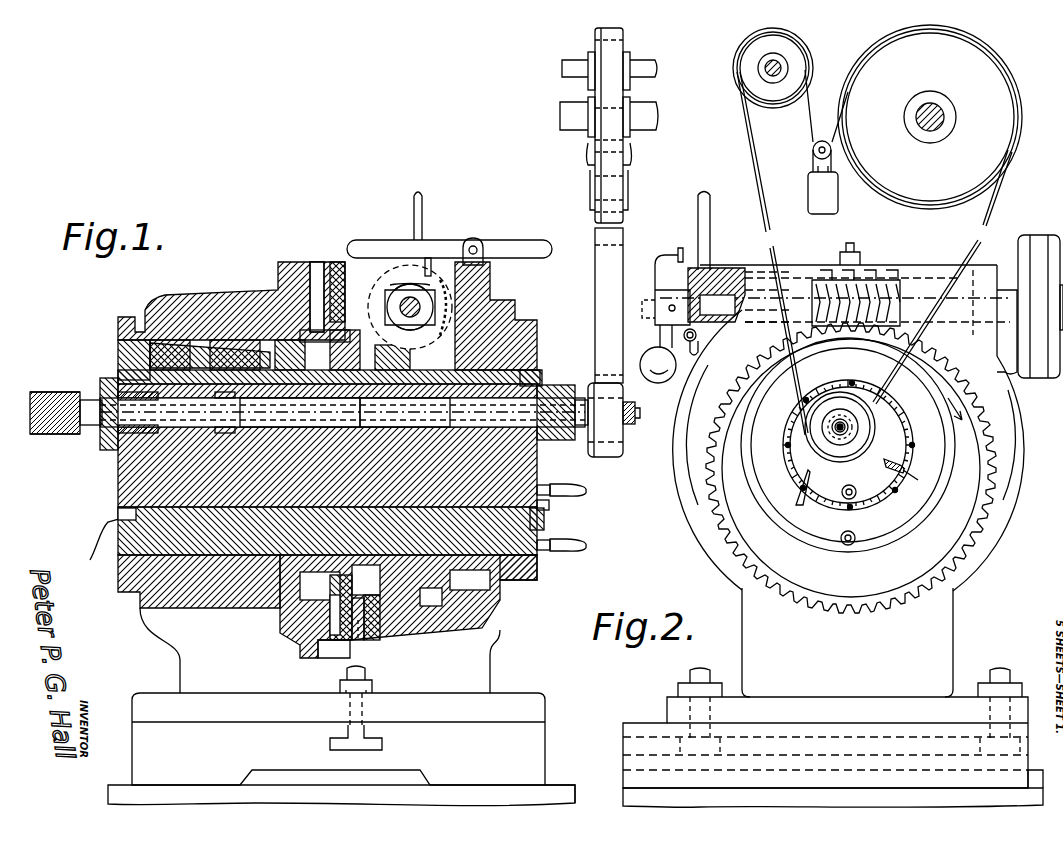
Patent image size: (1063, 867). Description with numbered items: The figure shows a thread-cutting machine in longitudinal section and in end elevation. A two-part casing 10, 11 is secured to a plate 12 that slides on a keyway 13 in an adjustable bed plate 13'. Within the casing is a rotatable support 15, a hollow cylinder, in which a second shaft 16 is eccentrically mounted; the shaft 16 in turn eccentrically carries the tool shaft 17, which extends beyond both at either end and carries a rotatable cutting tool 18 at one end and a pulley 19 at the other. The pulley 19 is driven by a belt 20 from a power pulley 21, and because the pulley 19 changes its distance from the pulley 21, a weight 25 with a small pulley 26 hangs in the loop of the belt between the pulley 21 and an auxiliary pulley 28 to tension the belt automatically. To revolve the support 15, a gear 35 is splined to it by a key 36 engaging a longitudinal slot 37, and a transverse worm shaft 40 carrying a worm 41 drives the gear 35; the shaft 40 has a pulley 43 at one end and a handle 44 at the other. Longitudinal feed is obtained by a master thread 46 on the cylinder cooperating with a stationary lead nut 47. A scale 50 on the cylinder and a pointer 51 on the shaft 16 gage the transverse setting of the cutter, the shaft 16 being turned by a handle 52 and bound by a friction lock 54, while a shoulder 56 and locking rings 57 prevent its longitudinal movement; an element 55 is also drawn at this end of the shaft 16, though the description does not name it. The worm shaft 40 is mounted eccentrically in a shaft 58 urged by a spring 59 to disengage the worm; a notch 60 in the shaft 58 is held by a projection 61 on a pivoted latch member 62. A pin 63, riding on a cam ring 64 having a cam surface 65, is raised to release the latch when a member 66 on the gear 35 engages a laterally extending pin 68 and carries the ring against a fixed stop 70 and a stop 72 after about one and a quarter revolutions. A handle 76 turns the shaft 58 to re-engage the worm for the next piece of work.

In FIG. 1, the casing part 10 is at (240, 612).
In FIG. 2, the casing part 10 is at (842, 428).
In FIG. 1, the casing part 11 is at (450, 632).
In FIG. 2, the casing part 11 is at (847, 642).
In FIG. 1, the plate 12 is at (338, 725).
In FIG. 2, the plate 12 is at (825, 728).
In FIG. 1, the keyway 13 is at (341, 786).
In FIG. 2, the keyway 13 is at (833, 788).
In FIG. 1, the adjustable bed plate 13' is at (562, 773).
In FIG. 1, the rotatable support 15 is at (537, 570).
In FIG. 2, the rotatable support 15 is at (848, 445).
In FIG. 1, the second shaft 16 is at (524, 475).
In FIG. 2, the second shaft 16 is at (849, 445).
In FIG. 1, the tool shaft 17 is at (640, 412).
In FIG. 2, the tool shaft 17 is at (832, 440).
In FIG. 1, the rotatable cutting tool 18 is at (60, 438).
In FIG. 1, the pulley 19 is at (623, 440).
In FIG. 2, the pulley 19 is at (852, 400).
In FIG. 1, the belt 20 is at (608, 232).
In FIG. 2, the belt 20 is at (980, 232).
In FIG. 1, the power pulley 21 is at (630, 190).
In FIG. 2, the power pulley 21 is at (930, 117).
In FIG. 1, the weight 25 is at (630, 212).
In FIG. 2, the weight 25 is at (838, 197).
In FIG. 2, the small pulley 26 is at (813, 150).
In FIG. 1, the auxiliary pulley 28 is at (623, 46).
In FIG. 2, the auxiliary pulley 28 is at (780, 108).
In FIG. 1, the gear 35 is at (398, 622).
In FIG. 2, the gear 35 is at (850, 612).
In FIG. 1, the key 36 is at (342, 412).
In FIG. 1, the longitudinal slot 37 is at (313, 412).
In FIG. 1, the worm shaft 40 is at (410, 300).
In FIG. 2, the worm shaft 40 is at (735, 300).
In FIG. 1, the worm 41 is at (400, 307).
In FIG. 2, the worm 41 is at (880, 295).
In FIG. 2, the pulley 43 is at (1035, 245).
In FIG. 2, the handle 44 is at (659, 286).
In FIG. 1, the master thread 46 is at (315, 302).
In FIG. 1, the lead nut 47 is at (272, 290).
In FIG. 2, the scale 50 is at (798, 498).
In FIG. 2, the pointer 51 is at (907, 476).
In FIG. 1, the handle 52 is at (588, 490).
In FIG. 2, the handle 52 is at (866, 486).
In FIG. 1, the friction lock 54 is at (118, 514).
In FIG. 1, the key 55 is at (550, 506).
In FIG. 1, the shoulder 56 is at (122, 500).
In FIG. 1, the locking rings 57 is at (542, 378).
In FIG. 2, the support shaft 58 is at (725, 285).
In FIG. 1, the spring 59 is at (500, 312).
In FIG. 2, the spring 59 is at (669, 354).
In FIG. 1, the notch 60 is at (410, 307).
In FIG. 1, the projection 61 is at (430, 258).
In FIG. 1, the pivoted latch member 62 is at (490, 240).
In FIG. 1, the pin 63 is at (345, 328).
In FIG. 1, the cam ring 64 is at (335, 300).
In FIG. 1, the cam surface 65 is at (350, 340).
In FIG. 1, the member 66 is at (364, 640).
In FIG. 1, the laterally extending pin 68 is at (269, 412).
In FIG. 1, the fixed stop 70 is at (356, 640).
In FIG. 1, the stop 72 is at (405, 412).
In FIG. 1, the handle 76 is at (422, 200).
In FIG. 2, the handle 76 is at (710, 205).